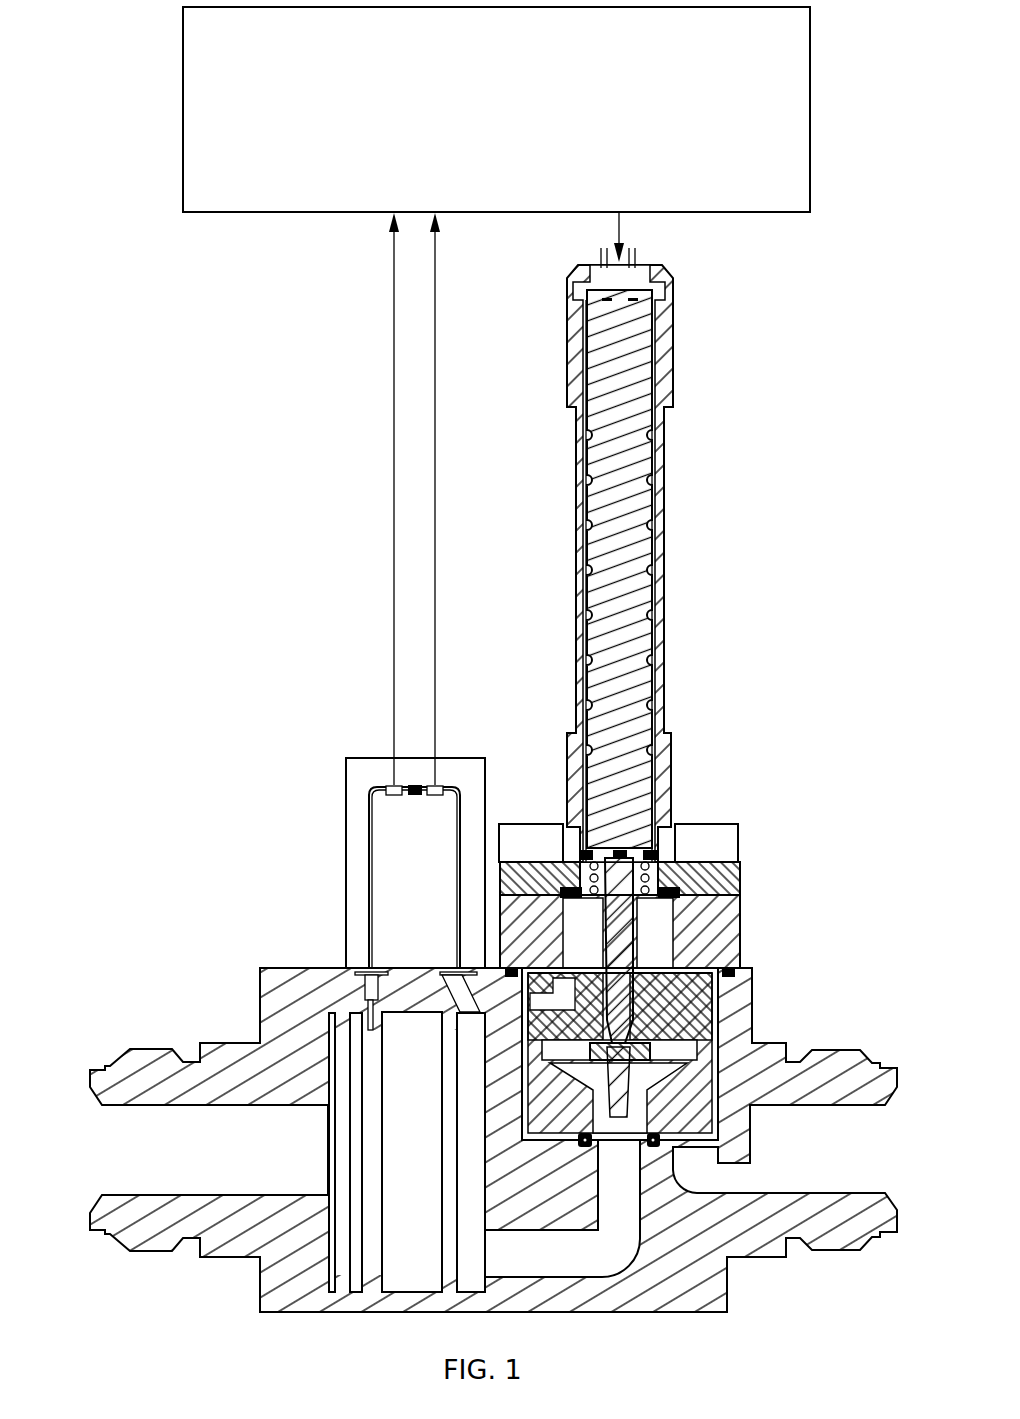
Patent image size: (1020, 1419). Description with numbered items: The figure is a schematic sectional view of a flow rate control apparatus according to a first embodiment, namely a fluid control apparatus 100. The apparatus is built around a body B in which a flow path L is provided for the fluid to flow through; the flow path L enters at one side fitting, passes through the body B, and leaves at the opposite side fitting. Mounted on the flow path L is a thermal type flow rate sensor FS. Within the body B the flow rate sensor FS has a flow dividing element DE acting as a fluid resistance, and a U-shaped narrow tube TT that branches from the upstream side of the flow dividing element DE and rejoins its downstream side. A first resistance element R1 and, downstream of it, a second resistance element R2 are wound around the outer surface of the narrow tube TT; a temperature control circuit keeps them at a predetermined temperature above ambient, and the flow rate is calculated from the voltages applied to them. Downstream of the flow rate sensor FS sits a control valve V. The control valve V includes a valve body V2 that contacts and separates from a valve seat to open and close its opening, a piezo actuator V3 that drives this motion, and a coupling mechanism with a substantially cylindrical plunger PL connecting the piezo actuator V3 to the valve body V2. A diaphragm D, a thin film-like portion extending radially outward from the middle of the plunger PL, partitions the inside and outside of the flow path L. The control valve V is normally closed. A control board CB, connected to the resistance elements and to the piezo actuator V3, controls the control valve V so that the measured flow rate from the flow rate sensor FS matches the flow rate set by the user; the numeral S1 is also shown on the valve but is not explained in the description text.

The fluid control apparatus 100 is at (120, 158).
The control board CB is at (233, 212).
The control valve V is at (676, 697).
The piezo actuator V3 is at (655, 660).
The flow rate sensor FS is at (366, 830).
The first resistance element R1 is at (391, 783).
The second resistance element R2 is at (440, 783).
The narrow tube TT is at (367, 832).
The diaphragm D is at (647, 968).
The plunger PL is at (633, 1007).
The valve body V2 is at (650, 1053).
The valve seal S1 is at (700, 1063).
The flow path L is at (190, 1160).
The flow dividing element DE is at (381, 1150).
The body B is at (258, 1283).